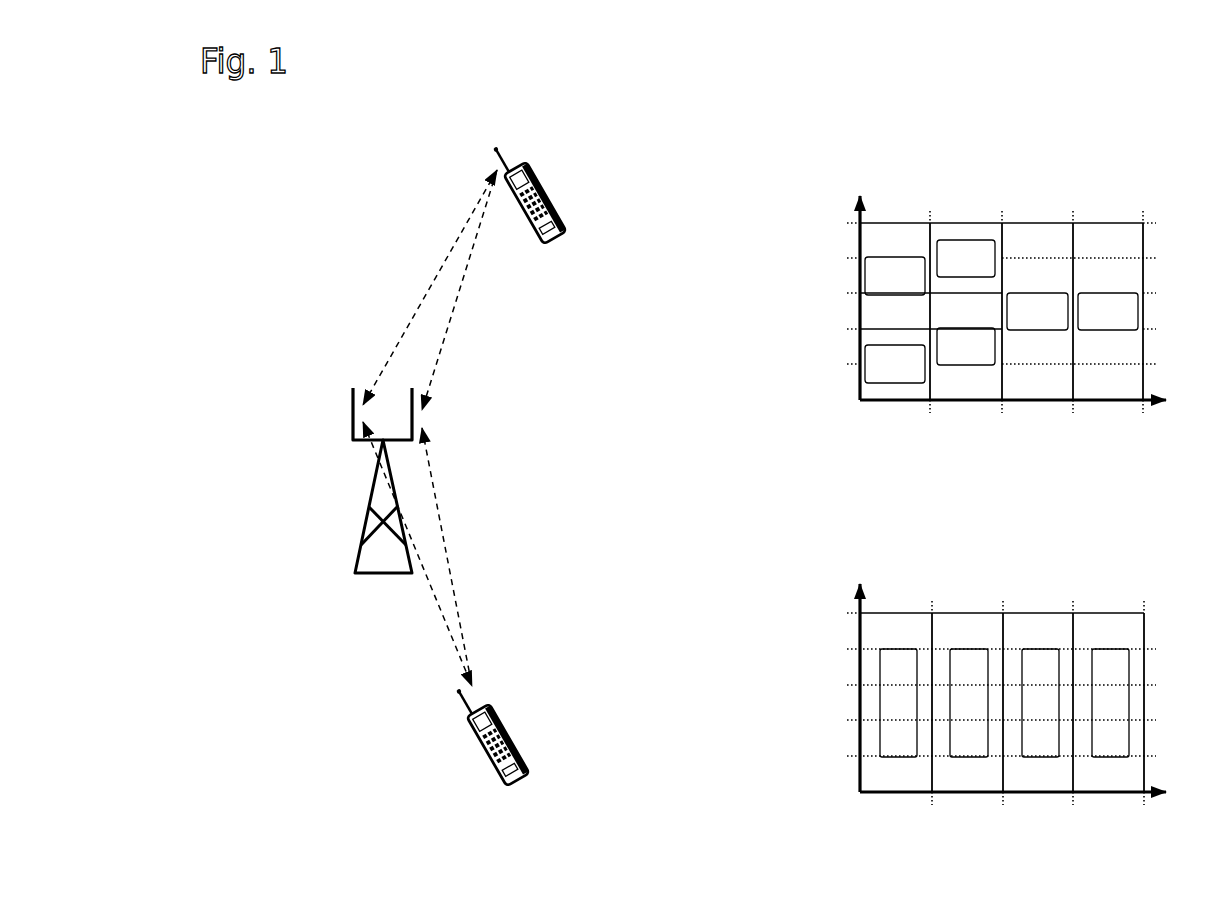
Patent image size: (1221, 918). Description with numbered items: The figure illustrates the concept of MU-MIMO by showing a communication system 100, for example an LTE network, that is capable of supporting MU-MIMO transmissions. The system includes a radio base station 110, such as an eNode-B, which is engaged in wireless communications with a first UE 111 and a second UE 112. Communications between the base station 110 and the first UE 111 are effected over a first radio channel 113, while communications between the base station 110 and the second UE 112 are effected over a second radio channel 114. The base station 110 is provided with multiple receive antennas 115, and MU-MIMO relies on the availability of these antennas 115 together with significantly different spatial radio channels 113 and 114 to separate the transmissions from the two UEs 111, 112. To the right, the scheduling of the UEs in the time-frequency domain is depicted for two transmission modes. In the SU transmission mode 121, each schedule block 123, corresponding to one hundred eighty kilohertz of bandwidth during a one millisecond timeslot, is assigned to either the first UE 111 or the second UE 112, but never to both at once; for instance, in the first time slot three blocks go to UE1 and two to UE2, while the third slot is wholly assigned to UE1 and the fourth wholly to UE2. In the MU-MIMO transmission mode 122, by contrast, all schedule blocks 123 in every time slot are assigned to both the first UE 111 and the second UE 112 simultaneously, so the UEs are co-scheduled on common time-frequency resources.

The communication system 100 is at (338, 808).
The radio base station 110 is at (362, 525).
The first UE 111 is at (544, 190).
The second UE 112 is at (509, 732).
The first radio channel 113 is at (430, 290).
The second radio channel 114 is at (437, 554).
The receive antennas 115 is at (408, 385).
The SU transmission mode 121 is at (1000, 286).
The MU-MIMO transmission mode 122 is at (847, 832).
The schedule block 123 is at (897, 243).